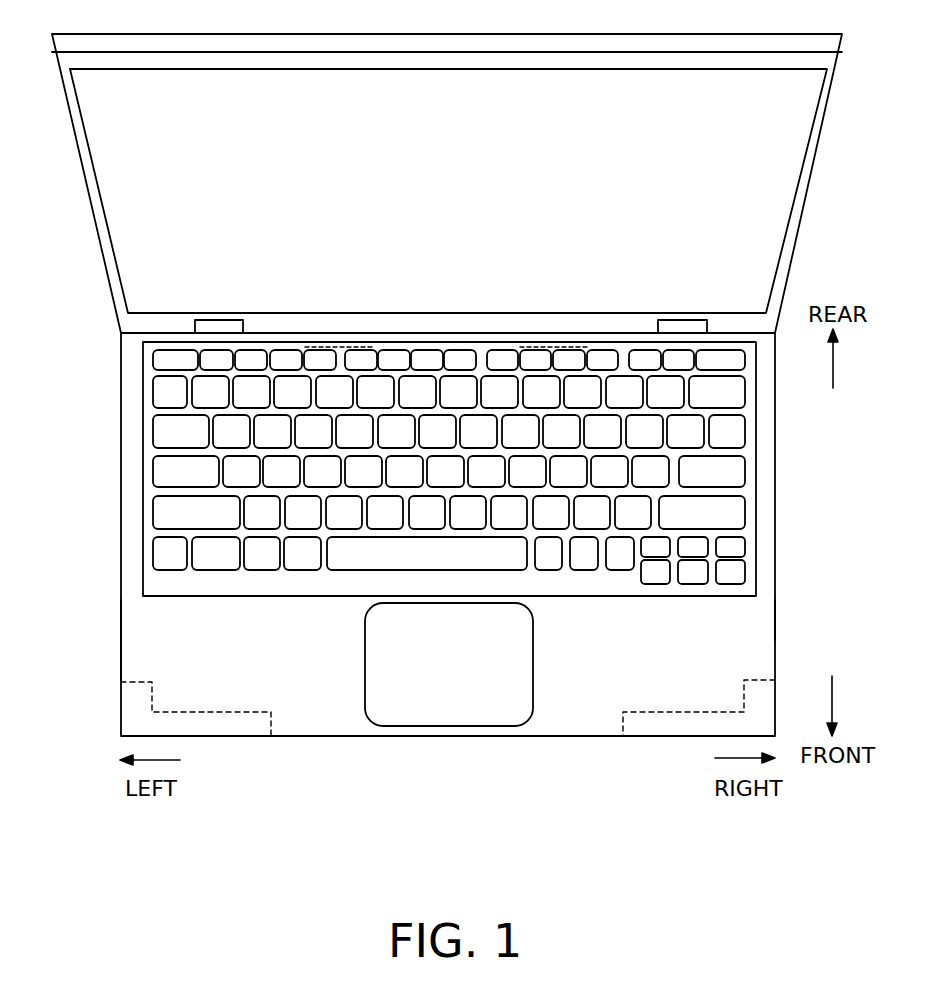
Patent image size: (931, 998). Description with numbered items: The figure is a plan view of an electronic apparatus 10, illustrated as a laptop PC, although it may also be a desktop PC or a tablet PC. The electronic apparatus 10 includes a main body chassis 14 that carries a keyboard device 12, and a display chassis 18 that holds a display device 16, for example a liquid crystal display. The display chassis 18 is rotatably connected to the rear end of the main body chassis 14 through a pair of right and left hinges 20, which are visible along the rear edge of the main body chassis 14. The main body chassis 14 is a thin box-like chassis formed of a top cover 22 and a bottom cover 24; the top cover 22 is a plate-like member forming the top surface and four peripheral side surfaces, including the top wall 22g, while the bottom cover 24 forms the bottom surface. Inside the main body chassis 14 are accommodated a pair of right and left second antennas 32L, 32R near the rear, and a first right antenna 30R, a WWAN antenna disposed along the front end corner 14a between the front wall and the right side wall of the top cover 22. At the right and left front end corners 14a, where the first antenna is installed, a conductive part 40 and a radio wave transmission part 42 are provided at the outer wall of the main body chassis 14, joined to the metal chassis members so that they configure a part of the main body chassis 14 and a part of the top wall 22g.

The electronic apparatus 10 is at (30, 147).
The keyboard device 12 is at (140, 448).
The main body chassis 14 is at (50, 597).
The front end corner 14a is at (120, 737).
The display device 16 is at (772, 180).
The display chassis 18 is at (832, 110).
The hinge 20 is at (213, 326).
The top cover 22 is at (136, 617).
The top wall 22g is at (757, 616).
The bottom cover 24 is at (121, 648).
The first right antenna 30R is at (205, 728).
The second left antenna 32L is at (303, 340).
The second right antenna 32R is at (512, 340).
The conductive part 40 is at (251, 737).
The radio wave transmission part 42 is at (136, 697).